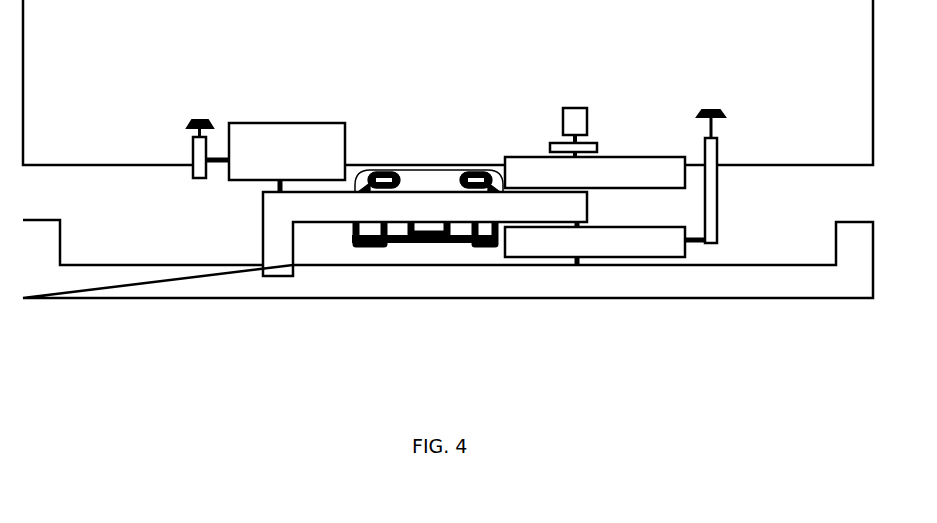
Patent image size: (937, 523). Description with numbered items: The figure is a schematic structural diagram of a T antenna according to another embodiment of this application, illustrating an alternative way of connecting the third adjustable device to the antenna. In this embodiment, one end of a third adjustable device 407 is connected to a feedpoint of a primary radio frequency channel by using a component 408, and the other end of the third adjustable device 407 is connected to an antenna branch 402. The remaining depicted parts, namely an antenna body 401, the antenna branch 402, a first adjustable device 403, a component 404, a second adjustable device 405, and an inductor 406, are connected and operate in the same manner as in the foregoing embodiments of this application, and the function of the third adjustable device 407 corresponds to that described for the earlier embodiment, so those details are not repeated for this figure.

The antenna body 401 is at (453, 300).
The antenna branch 402 is at (263, 233).
The first adjustable device 403 is at (550, 258).
The component 404 is at (718, 192).
The second adjustable device 405 is at (345, 147).
The inductor 406 is at (193, 162).
The third adjustable device 407 is at (505, 167).
The component 408 is at (550, 147).